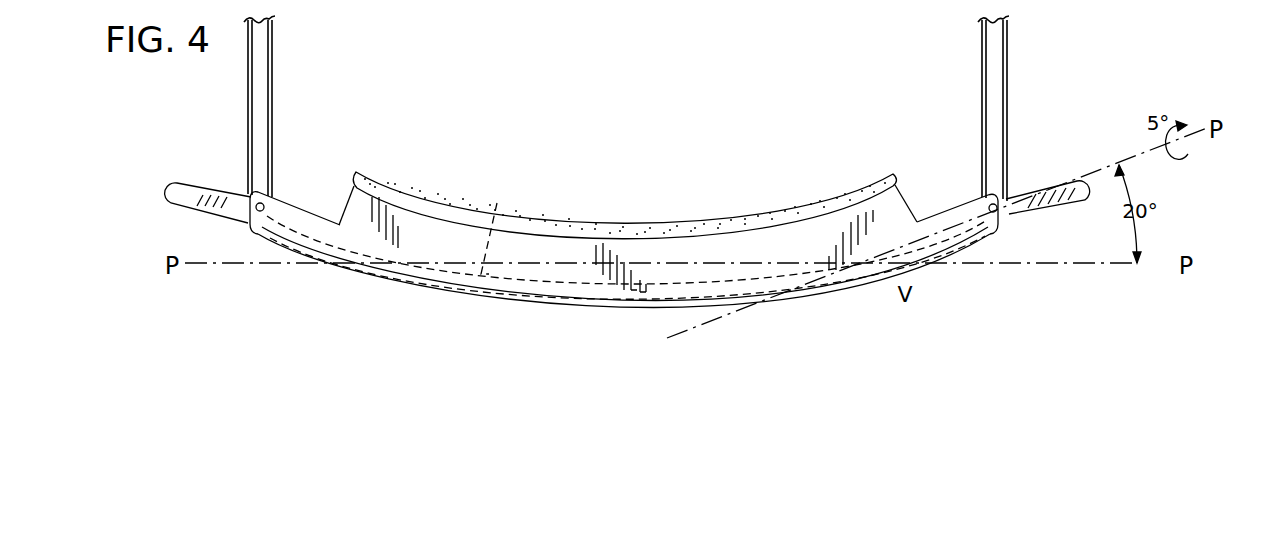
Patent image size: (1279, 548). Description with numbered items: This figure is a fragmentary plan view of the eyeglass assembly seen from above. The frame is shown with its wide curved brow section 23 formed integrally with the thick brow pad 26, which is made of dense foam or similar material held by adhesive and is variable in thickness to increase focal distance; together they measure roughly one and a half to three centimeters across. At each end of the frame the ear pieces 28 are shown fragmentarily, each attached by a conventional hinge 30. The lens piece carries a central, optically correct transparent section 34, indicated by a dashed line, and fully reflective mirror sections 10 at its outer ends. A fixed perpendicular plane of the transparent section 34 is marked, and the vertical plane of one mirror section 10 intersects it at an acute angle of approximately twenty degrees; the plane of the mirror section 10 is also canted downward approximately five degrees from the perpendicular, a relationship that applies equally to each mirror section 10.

The mirror sections 10 is at (204, 182).
The brow section 23 is at (666, 247).
The brow pad 26 is at (752, 215).
The ear pieces 28 is at (255, 92).
The hinge 30 is at (279, 193).
The transparent section 34 is at (497, 202).